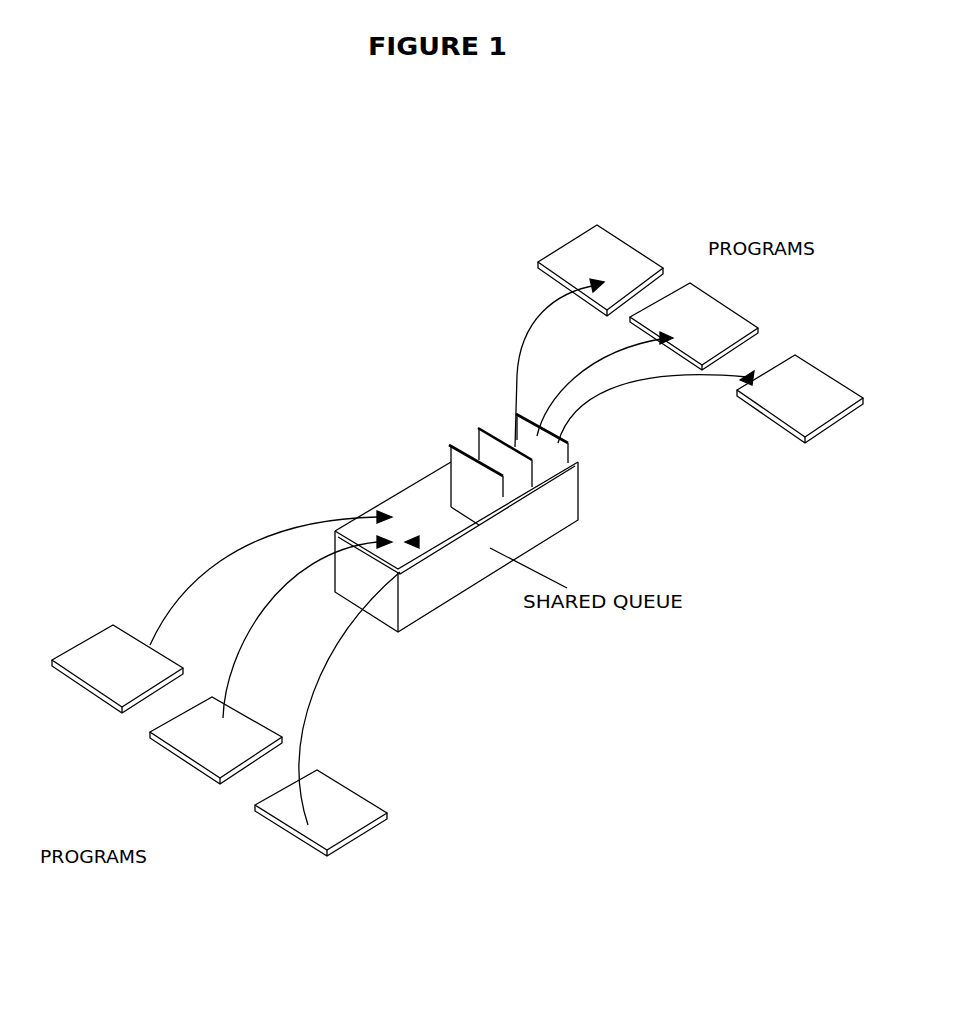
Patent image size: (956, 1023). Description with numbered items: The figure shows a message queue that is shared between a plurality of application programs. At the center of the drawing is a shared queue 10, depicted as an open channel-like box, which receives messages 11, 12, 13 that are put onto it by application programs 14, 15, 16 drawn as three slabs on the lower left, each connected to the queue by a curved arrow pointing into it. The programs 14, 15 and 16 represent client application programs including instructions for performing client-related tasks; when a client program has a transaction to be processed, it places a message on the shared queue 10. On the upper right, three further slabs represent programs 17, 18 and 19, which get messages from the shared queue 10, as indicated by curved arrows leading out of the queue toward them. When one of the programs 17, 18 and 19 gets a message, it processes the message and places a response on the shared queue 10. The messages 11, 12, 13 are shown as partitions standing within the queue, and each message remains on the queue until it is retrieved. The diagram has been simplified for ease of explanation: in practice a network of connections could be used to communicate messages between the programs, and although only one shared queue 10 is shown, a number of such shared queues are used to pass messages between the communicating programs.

The shared queue 10 is at (538, 530).
The message 11 is at (473, 485).
The message 12 is at (497, 445).
The message 13 is at (530, 428).
The application program 14 is at (107, 660).
The application program 15 is at (222, 752).
The application program 16 is at (352, 808).
The program 17 is at (623, 270).
The program 18 is at (698, 315).
The program 19 is at (808, 382).